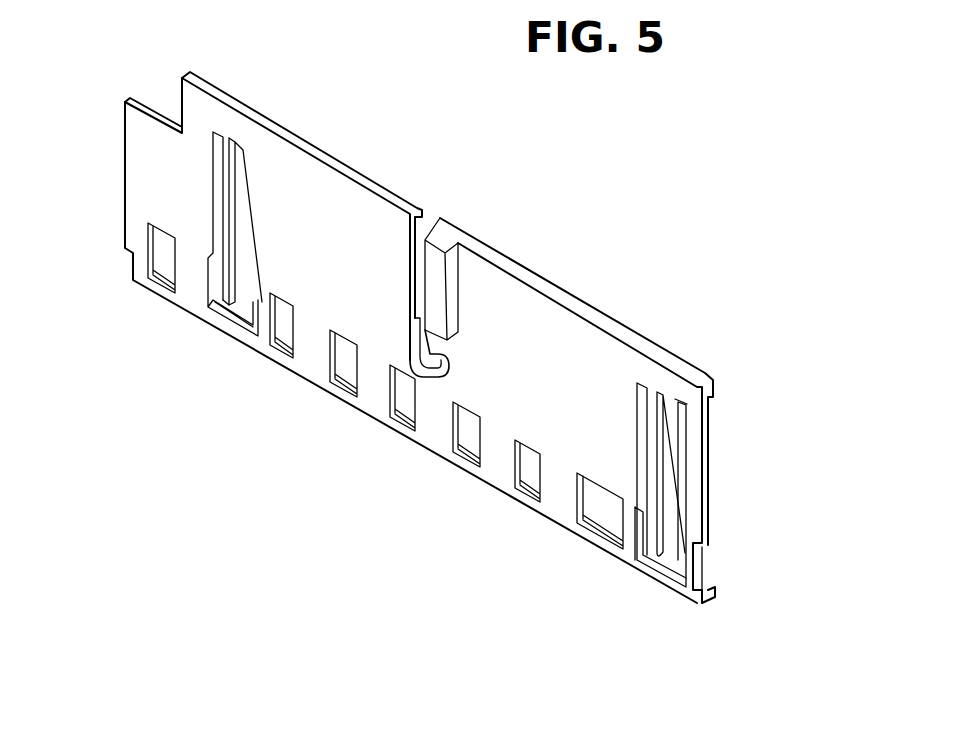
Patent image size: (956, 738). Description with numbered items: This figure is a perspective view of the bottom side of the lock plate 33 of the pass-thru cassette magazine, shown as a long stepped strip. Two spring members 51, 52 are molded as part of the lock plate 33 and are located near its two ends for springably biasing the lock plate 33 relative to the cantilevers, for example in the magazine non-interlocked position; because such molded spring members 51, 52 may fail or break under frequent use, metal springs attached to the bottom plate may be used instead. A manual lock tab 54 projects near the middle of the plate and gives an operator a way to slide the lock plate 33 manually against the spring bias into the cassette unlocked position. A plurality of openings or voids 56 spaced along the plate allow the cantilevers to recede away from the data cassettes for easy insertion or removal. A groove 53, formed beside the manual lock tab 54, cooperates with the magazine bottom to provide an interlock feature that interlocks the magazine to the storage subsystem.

The lock plate 33 is at (371, 138).
The spring member 51 is at (213, 307).
The spring member 52 is at (660, 498).
The groove 53 is at (430, 376).
The manual lock tab 54 is at (433, 292).
The openings or voids 56 is at (600, 510).